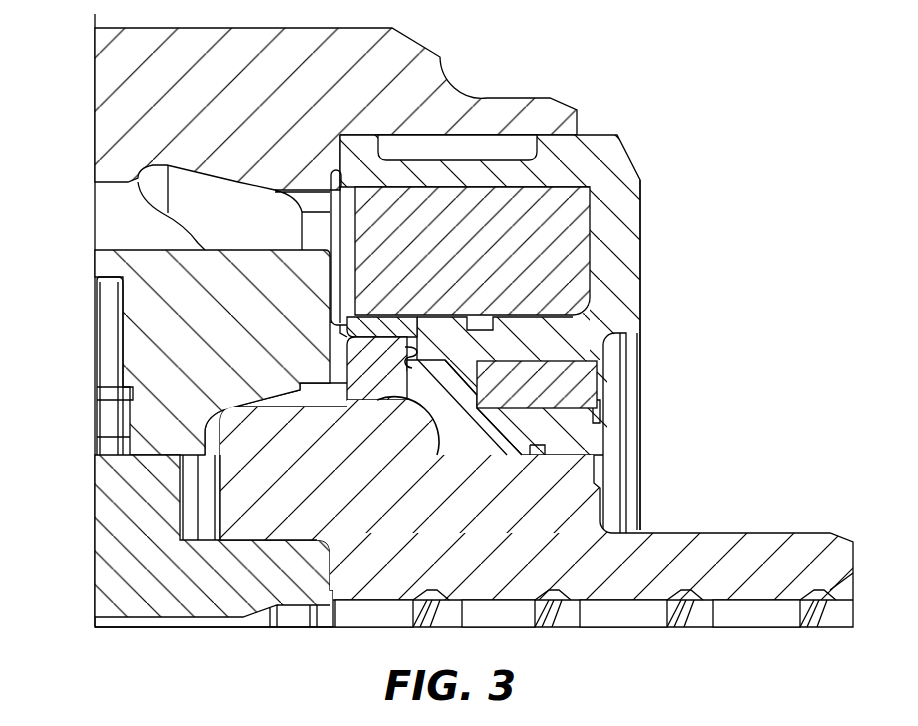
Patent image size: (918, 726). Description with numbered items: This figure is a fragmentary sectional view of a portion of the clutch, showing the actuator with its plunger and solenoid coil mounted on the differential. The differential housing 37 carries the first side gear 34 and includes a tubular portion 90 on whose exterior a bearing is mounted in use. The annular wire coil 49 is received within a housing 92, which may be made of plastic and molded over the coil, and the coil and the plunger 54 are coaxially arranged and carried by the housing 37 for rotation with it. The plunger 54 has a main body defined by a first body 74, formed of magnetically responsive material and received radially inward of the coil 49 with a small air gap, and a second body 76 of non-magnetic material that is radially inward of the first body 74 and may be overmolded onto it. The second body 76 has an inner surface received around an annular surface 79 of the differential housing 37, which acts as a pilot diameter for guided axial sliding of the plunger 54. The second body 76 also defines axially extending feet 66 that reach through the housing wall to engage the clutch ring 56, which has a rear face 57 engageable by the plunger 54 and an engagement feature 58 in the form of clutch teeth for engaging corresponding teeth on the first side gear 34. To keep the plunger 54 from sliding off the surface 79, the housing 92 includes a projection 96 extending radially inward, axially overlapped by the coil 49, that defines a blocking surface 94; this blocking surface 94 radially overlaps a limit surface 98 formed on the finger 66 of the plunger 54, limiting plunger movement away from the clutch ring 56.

The first side gear 34 is at (128, 590).
The housing 37 is at (425, 62).
The annular wire coil 49 is at (573, 207).
The plunger 54 is at (626, 394).
The clutch ring 56 is at (172, 372).
The rear face 57 is at (330, 285).
The engagement feature 58 is at (110, 337).
The feet 66 is at (357, 367).
The first body 74 is at (615, 383).
The second body 76 is at (413, 387).
The surface 79 is at (460, 433).
The tubular portion 90 is at (786, 532).
The housing 92 is at (623, 222).
The blocking surface 94 is at (410, 320).
The projection 96 is at (462, 330).
The limit surface 98 is at (405, 352).